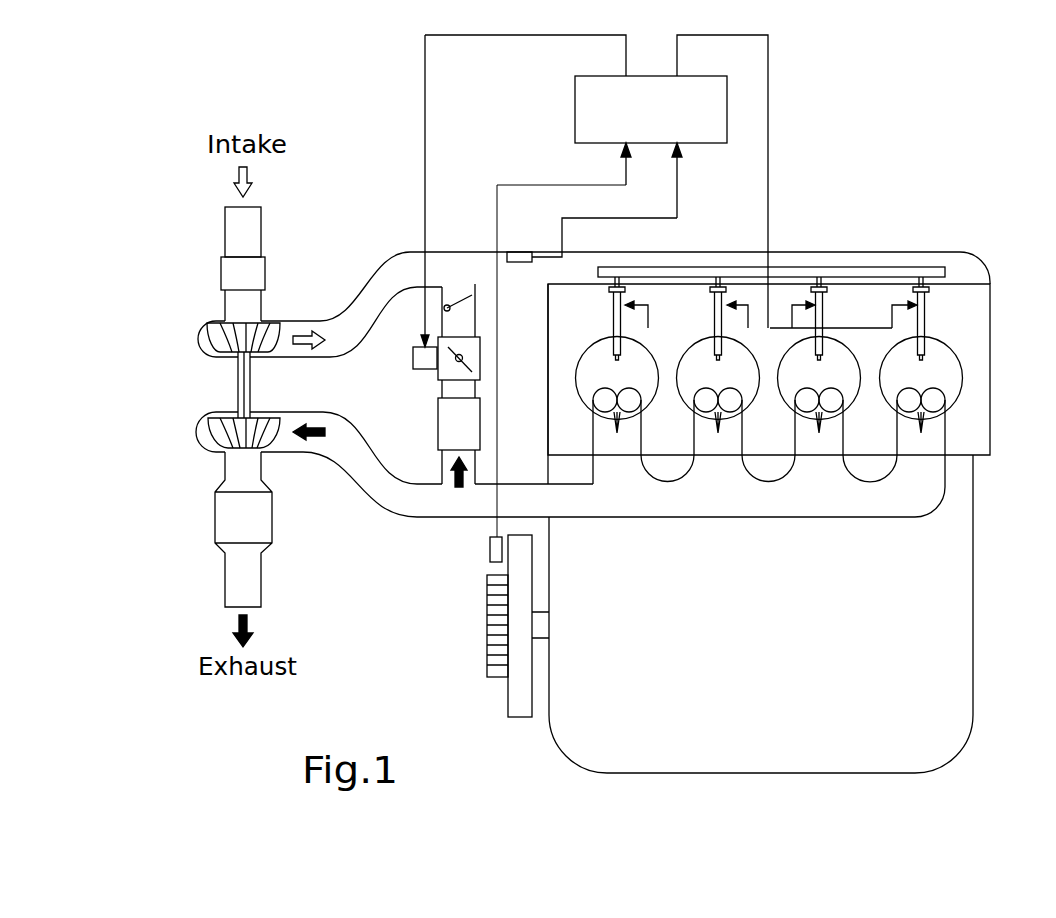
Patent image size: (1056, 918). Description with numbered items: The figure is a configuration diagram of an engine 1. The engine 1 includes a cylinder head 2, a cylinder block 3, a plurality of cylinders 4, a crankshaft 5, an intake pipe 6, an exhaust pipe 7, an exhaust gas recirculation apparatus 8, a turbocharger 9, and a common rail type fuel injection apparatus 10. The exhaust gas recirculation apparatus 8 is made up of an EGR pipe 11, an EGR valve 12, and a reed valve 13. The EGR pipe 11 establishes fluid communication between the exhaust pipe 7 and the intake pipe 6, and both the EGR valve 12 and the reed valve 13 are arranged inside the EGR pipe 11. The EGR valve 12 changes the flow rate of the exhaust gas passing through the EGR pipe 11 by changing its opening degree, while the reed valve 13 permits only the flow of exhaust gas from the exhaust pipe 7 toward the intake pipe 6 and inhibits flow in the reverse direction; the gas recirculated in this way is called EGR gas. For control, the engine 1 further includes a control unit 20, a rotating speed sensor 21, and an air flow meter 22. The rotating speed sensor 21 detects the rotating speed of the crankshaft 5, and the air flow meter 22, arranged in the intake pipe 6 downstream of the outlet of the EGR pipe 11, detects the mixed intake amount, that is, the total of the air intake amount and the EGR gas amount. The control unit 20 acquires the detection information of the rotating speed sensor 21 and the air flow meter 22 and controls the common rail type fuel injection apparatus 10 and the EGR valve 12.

The engine 1 is at (1030, 90).
The cylinder head 2 is at (983, 357).
The cylinder block 3 is at (968, 512).
The cylinders 4 is at (948, 357).
The crankshaft 5 is at (538, 633).
The intake pipe 6 is at (380, 280).
The exhaust pipe 7 is at (632, 512).
The exhaust gas recirculation apparatus 8 is at (423, 395).
The turbocharger 9 is at (213, 392).
The common rail type fuel injection apparatus 10 is at (853, 270).
The EGR pipe 11 is at (475, 388).
The EGR valve 12 is at (478, 368).
The reed valve 13 is at (457, 297).
The control unit 20 is at (577, 108).
The rotating speed sensor 21 is at (490, 550).
The air flow meter 22 is at (518, 252).